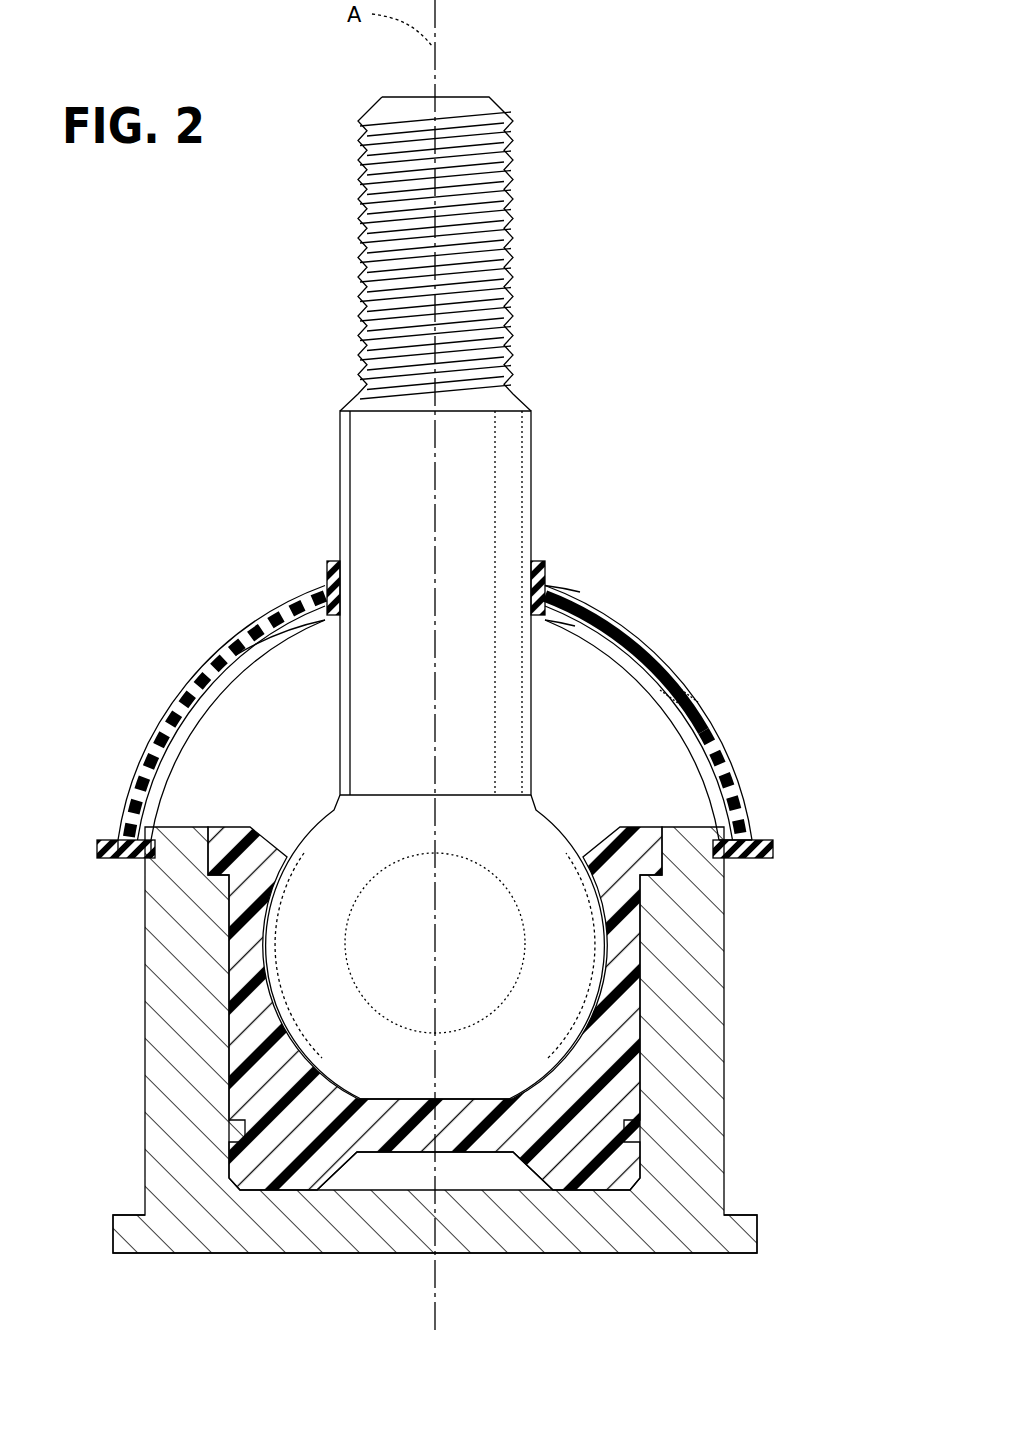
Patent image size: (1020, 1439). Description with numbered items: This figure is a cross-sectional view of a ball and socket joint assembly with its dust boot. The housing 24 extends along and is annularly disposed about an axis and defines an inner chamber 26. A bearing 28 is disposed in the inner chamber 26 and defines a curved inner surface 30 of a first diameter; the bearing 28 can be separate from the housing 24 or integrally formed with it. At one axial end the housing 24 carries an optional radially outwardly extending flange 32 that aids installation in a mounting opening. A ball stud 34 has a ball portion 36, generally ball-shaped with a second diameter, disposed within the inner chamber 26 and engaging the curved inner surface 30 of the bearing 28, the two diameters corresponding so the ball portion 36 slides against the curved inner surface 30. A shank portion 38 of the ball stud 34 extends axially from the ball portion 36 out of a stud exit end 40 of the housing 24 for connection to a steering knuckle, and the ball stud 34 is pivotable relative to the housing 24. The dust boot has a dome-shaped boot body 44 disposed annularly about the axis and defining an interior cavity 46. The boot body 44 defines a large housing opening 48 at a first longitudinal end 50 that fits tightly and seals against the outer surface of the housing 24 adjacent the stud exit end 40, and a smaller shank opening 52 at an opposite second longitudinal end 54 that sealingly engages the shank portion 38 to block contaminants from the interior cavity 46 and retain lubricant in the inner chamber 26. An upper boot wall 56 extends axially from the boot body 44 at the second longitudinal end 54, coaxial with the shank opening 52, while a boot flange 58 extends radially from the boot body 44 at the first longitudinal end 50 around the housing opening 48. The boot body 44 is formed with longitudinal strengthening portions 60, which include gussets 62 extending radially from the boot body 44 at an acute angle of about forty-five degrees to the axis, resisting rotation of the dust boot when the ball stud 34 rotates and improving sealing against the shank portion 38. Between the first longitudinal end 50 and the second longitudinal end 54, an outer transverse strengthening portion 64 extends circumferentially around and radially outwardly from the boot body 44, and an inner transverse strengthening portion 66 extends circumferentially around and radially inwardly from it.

The housing 24 is at (725, 958).
The inner chamber 26 is at (642, 1022).
The bearing 28 is at (618, 1100).
The curved inner surface 30 is at (600, 947).
The flange 32 is at (746, 1230).
The ball stud 34 is at (534, 518).
The ball portion 36 is at (496, 956).
The shank portion 38 is at (533, 479).
The stud exit end 40 is at (693, 828).
The boot body 44 is at (634, 630).
The interior cavity 46 is at (678, 722).
The housing opening 48 is at (130, 826).
The first longitudinal end 50 is at (760, 822).
The shank opening 52 is at (345, 612).
The second longitudinal end 54 is at (555, 598).
The upper boot wall 56 is at (546, 575).
The boot flange 58 is at (121, 860).
The longitudinal strengthening portions 60 is at (676, 663).
The gussets 62 is at (664, 644).
The outer transverse strengthening portion 64 is at (701, 689).
The inner transverse strengthening portion 66 is at (206, 683).